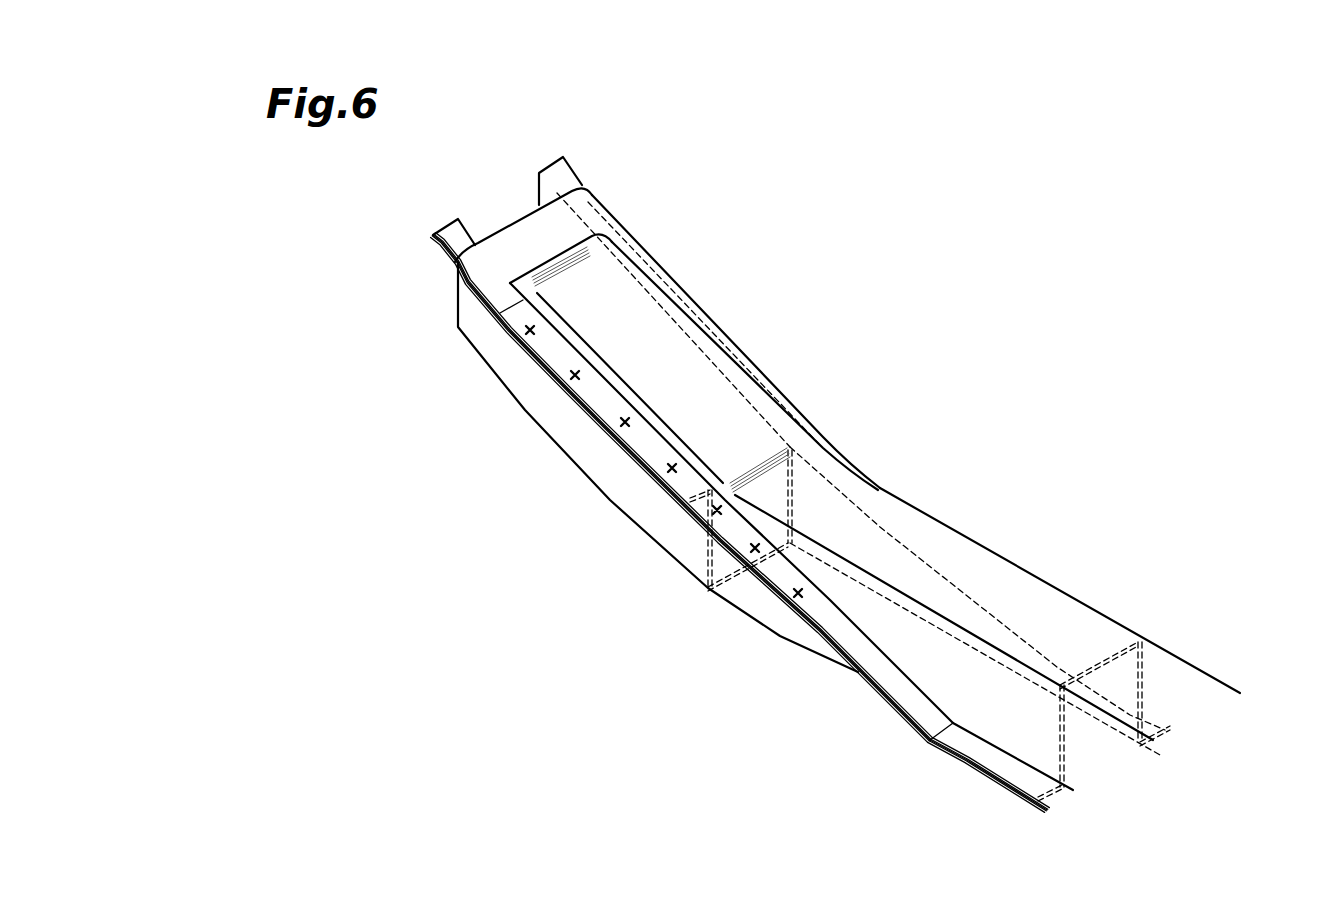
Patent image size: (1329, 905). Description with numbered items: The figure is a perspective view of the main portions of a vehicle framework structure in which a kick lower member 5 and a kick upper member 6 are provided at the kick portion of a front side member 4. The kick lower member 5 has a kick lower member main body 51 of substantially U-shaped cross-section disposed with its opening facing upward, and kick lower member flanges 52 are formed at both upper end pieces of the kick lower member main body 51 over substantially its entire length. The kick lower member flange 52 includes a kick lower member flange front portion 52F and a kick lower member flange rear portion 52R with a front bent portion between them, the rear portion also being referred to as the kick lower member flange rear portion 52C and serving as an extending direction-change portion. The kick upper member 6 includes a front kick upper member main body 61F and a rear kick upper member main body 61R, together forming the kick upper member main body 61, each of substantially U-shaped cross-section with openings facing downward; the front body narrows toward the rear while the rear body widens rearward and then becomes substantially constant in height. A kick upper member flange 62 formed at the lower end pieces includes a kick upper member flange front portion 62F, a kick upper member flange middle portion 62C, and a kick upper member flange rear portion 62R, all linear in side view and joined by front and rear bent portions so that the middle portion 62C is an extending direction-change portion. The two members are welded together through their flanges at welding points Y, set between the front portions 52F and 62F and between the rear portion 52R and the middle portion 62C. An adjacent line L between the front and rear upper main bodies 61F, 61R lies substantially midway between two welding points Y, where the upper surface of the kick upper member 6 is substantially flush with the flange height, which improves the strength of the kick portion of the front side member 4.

The front side member 4 is at (917, 370).
The kick lower member 5 is at (709, 608).
The kick upper member 6 is at (738, 318).
The kick lower member main body 51 is at (620, 503).
The kick lower member flange 52 is at (693, 512).
The kick lower member flange rear portion 52C is at (603, 430).
The kick lower member flange front portion 52F is at (447, 257).
The kick lower member flange rear portion 52R is at (985, 778).
The kick upper member main body 61 is at (873, 520).
The front kick upper member main body 61F is at (597, 270).
The rear kick upper member main body 61R is at (1088, 620).
The kick upper member flange 62 is at (607, 402).
The kick upper member flange middle portion 62C is at (788, 400).
The kick upper member flange front portion 62F is at (522, 232).
The kick upper member flange rear portion 62R is at (967, 743).
The adjacent line L is at (790, 462).
The welding points Y is at (572, 376).